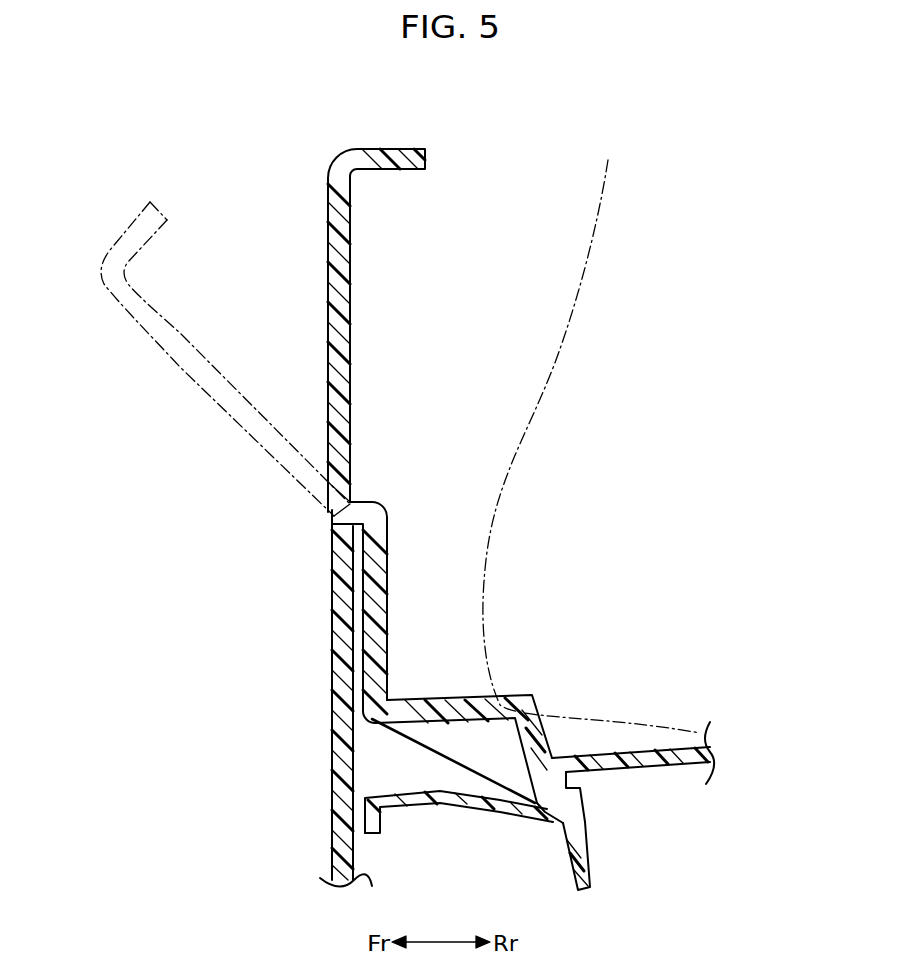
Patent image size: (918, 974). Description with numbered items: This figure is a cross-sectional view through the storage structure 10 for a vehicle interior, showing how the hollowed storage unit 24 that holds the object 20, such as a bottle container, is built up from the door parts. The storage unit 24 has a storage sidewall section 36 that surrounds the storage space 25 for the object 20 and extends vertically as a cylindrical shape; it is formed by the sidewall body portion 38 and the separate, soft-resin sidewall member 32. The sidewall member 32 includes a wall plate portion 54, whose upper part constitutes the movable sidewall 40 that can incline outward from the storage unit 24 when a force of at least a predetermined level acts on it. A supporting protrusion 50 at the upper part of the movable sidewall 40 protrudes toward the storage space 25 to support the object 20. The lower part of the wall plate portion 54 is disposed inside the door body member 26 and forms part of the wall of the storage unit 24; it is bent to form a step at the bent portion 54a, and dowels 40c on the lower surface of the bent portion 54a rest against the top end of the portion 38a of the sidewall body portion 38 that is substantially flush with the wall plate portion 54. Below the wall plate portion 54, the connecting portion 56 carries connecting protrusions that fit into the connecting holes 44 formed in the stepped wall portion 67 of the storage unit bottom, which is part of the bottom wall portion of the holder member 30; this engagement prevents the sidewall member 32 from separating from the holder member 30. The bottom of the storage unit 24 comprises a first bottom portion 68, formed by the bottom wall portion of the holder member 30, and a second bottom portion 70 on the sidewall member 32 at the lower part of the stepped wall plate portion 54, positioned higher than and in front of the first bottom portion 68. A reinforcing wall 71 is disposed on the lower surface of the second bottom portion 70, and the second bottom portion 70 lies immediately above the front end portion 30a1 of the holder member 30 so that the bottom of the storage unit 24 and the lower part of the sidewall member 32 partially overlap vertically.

The storage structure 10 is at (256, 189).
The object 20 is at (586, 279).
The storage unit 24 is at (465, 215).
The storage space 25 is at (385, 372).
The door body member 26 is at (331, 609).
The holder member 30 is at (665, 769).
The front end portion of the bottom wall portion 30a1 is at (436, 808).
The sidewall member 32 is at (324, 268).
The storage sidewall section 36 is at (308, 223).
The sidewall body portion 38 is at (328, 739).
The portion of the sidewall body portion 38a is at (346, 695).
The movable sidewall 40 is at (340, 327).
The dowels 40c is at (340, 532).
The connecting holes 44 is at (568, 798).
The supporting protrusion 50 is at (386, 160).
The wall plate portion 54 is at (337, 424).
The bent portion 54a is at (336, 516).
The connecting portion 56 is at (592, 870).
The stepped wall portion 67 is at (562, 780).
The first bottom portion 68 is at (619, 755).
The second bottom portion 70 is at (450, 706).
The reinforcing wall 71 is at (470, 745).